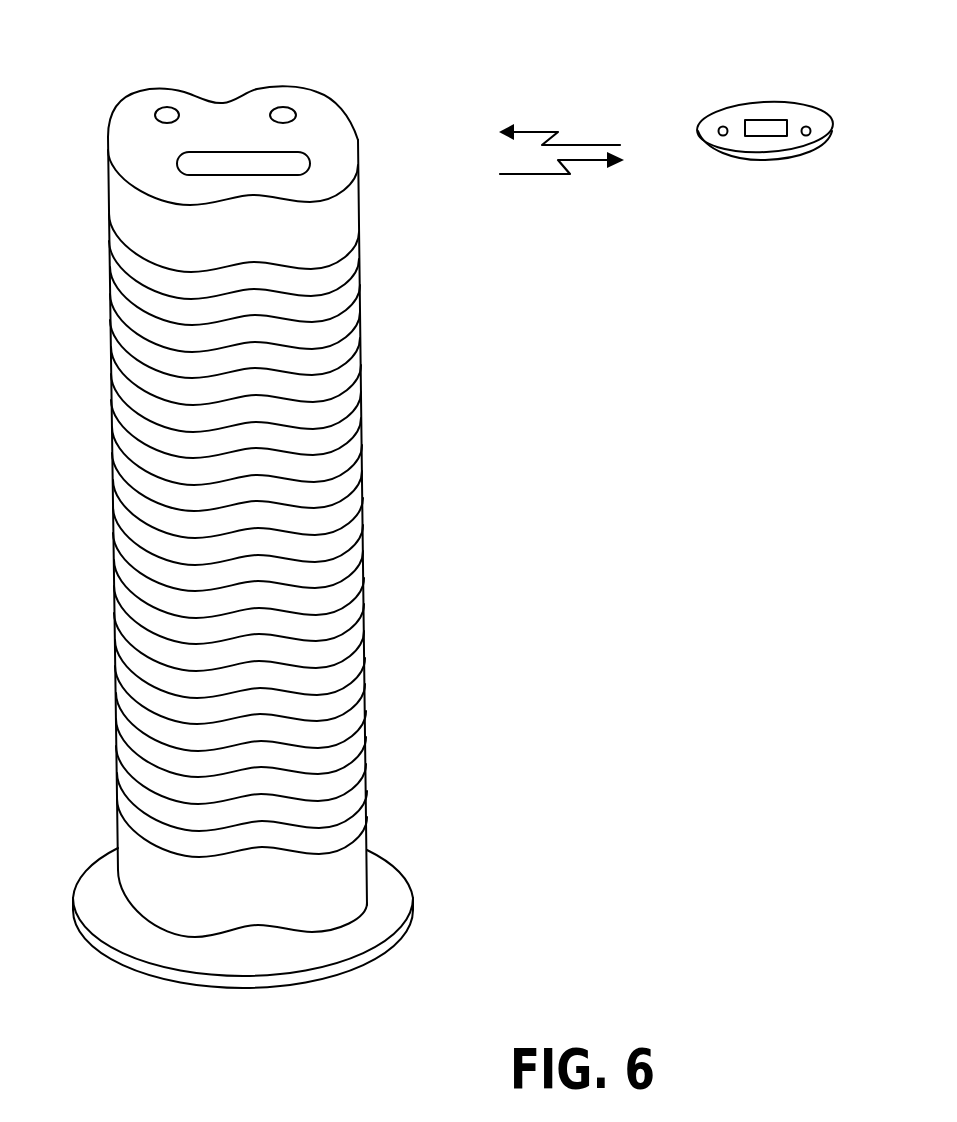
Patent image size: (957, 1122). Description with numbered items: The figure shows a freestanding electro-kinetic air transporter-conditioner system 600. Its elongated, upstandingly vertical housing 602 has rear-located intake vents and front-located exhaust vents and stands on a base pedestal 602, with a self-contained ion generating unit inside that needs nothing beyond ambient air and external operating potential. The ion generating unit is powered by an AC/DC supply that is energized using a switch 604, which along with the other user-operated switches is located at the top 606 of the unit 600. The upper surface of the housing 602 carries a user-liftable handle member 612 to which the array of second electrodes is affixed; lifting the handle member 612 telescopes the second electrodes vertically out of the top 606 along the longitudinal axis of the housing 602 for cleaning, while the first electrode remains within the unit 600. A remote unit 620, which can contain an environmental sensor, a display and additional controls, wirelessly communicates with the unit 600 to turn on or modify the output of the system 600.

The electro-kinetic air transporter-conditioner system 600 is at (96, 68).
The housing 602 is at (359, 402).
The switch 604 is at (168, 105).
The top 606 is at (360, 142).
The handle member 612 is at (292, 160).
The remote unit 620 is at (822, 109).